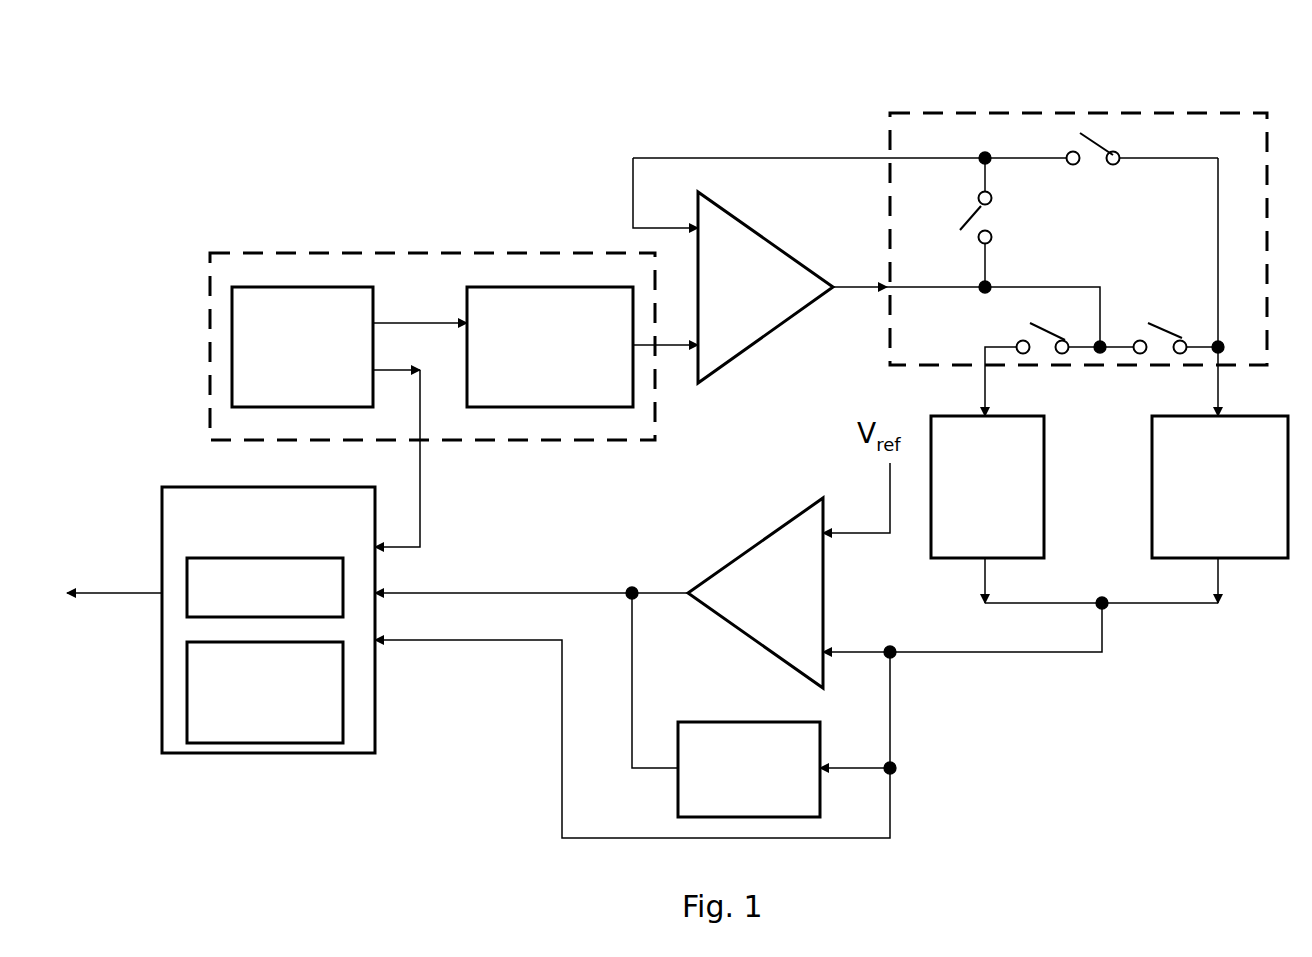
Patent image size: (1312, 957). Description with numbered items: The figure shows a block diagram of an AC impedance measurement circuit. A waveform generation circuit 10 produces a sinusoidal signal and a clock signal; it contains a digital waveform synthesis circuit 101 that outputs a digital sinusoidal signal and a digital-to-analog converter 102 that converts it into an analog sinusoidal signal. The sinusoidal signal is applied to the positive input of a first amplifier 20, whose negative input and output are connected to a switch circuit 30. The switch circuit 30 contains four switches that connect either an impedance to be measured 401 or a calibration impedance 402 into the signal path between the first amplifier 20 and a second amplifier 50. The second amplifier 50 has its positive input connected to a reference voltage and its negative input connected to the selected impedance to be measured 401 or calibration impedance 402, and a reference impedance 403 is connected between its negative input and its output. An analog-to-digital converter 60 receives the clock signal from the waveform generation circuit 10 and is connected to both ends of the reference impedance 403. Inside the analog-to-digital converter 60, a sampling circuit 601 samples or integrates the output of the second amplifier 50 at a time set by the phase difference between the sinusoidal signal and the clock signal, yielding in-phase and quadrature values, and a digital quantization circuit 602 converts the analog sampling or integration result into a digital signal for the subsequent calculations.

The waveform generation circuit 10 is at (387, 250).
The digital waveform synthesis circuit 101 is at (253, 302).
The digital-to-analog converter 102 is at (530, 297).
The first amplifier 20 is at (743, 240).
The switch circuit 30 is at (1107, 108).
The second amplifier 50 is at (773, 553).
The analog-to-digital converter 60 is at (178, 532).
The sampling circuit 601 is at (210, 577).
The digital quantization circuit 602 is at (200, 690).
The impedance to be measured 401 is at (987, 487).
The calibration impedance 402 is at (1220, 487).
The reference impedance 403 is at (749, 769).